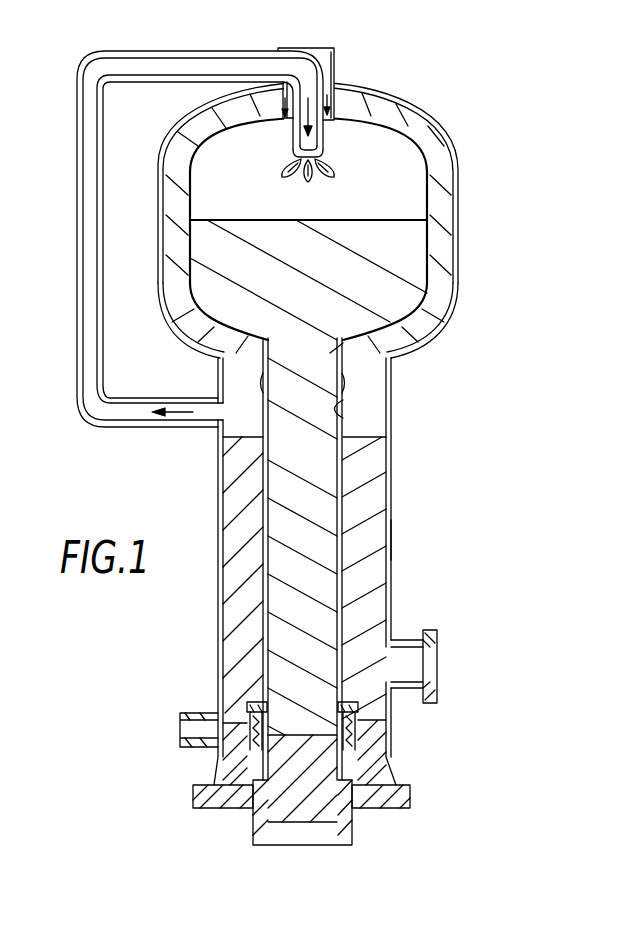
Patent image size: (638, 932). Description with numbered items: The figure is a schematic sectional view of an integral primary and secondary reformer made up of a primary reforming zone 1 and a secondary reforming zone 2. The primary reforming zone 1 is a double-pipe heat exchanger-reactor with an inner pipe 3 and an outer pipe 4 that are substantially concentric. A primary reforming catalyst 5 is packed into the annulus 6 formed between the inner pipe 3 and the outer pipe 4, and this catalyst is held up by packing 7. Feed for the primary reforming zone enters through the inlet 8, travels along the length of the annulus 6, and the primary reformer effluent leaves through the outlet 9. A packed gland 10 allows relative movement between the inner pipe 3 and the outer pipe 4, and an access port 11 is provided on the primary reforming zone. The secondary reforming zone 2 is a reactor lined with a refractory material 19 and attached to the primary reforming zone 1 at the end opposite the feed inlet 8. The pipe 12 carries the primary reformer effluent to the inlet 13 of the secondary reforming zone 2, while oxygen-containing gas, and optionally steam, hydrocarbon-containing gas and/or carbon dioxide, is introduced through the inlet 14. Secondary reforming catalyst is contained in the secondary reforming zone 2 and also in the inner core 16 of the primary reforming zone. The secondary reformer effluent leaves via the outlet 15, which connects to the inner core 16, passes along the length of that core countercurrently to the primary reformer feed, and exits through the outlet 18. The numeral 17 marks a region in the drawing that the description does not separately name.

The primary reforming zone 1 is at (408, 536).
The secondary reforming zone 2 is at (472, 193).
The inner pipe 3 is at (342, 582).
The outer pipe 4 is at (391, 602).
The primary reforming catalyst 5 is at (368, 508).
The annulus 6 is at (370, 403).
The packing 7 is at (375, 773).
The inlet 8 is at (182, 733).
The outlet 9 is at (217, 412).
The packed gland 10 is at (357, 727).
The access port 11 is at (437, 672).
The pipe 12 is at (77, 199).
The inlet 13 is at (323, 145).
The inlet 14 is at (315, 57).
The outlet 15 is at (330, 353).
The inner core 16 is at (345, 425).
The liquid 17 is at (318, 260).
The outlet 18 is at (298, 835).
The refractory material 19 is at (437, 258).